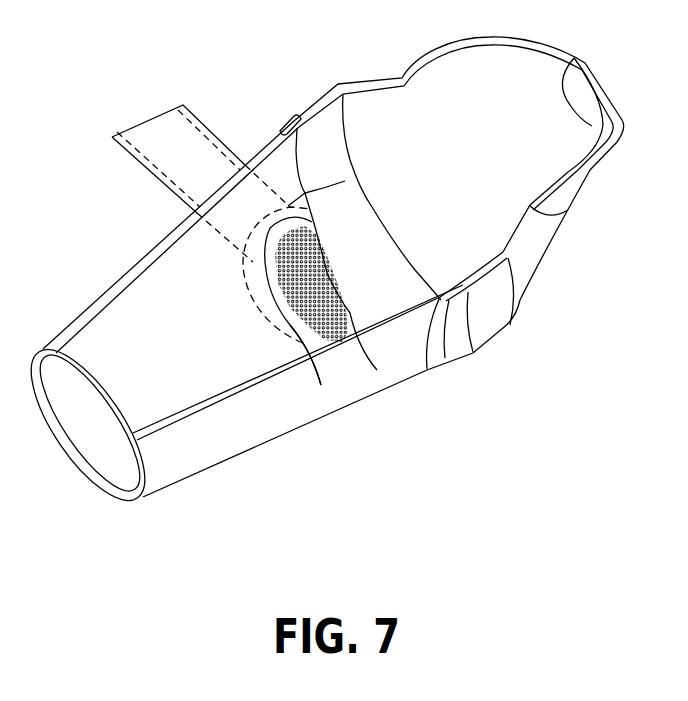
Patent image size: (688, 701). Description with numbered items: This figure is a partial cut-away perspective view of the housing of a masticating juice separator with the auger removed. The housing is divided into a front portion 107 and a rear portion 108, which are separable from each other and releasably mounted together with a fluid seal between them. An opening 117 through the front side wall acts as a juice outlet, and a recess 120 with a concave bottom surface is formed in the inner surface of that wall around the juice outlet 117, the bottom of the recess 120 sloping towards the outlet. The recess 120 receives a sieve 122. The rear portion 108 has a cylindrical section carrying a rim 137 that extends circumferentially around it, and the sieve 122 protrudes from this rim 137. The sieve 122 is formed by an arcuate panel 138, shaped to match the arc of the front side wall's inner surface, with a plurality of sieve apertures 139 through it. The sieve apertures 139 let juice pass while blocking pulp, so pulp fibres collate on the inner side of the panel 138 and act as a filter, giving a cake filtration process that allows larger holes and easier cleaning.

The front portion 107 is at (176, 460).
The rear portion 108 is at (538, 240).
The opening 117 is at (283, 232).
The recess 120 is at (345, 181).
The sieve 122 is at (292, 291).
The rim 137 is at (289, 127).
The panel 138 is at (321, 385).
The sieve apertures 139 is at (377, 370).